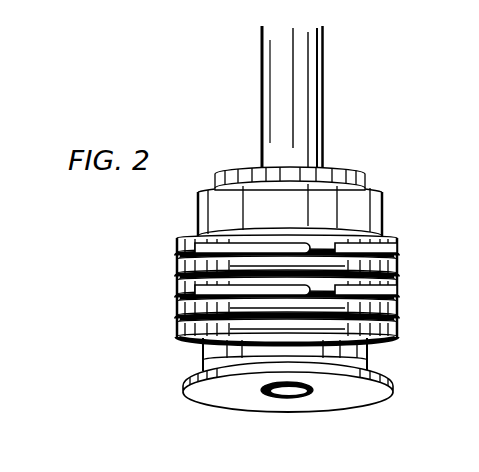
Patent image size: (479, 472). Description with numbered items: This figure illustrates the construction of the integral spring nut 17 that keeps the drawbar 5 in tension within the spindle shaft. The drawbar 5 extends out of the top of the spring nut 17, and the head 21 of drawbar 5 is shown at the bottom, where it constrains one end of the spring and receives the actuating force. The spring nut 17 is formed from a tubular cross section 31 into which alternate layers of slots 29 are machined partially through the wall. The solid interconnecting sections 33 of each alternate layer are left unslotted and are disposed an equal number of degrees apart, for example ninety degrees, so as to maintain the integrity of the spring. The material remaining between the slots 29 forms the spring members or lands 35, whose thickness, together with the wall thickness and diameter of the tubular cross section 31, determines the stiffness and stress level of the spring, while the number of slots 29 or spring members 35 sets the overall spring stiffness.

The drawbar 5 is at (262, 106).
The integral spring nut 17 is at (318, 245).
The head of drawbar 21 is at (185, 383).
The slots 29 is at (178, 300).
The tubular cross section 31 is at (478, 101).
The solid interconnecting sections 33 is at (318, 291).
The spring members 35 is at (178, 271).